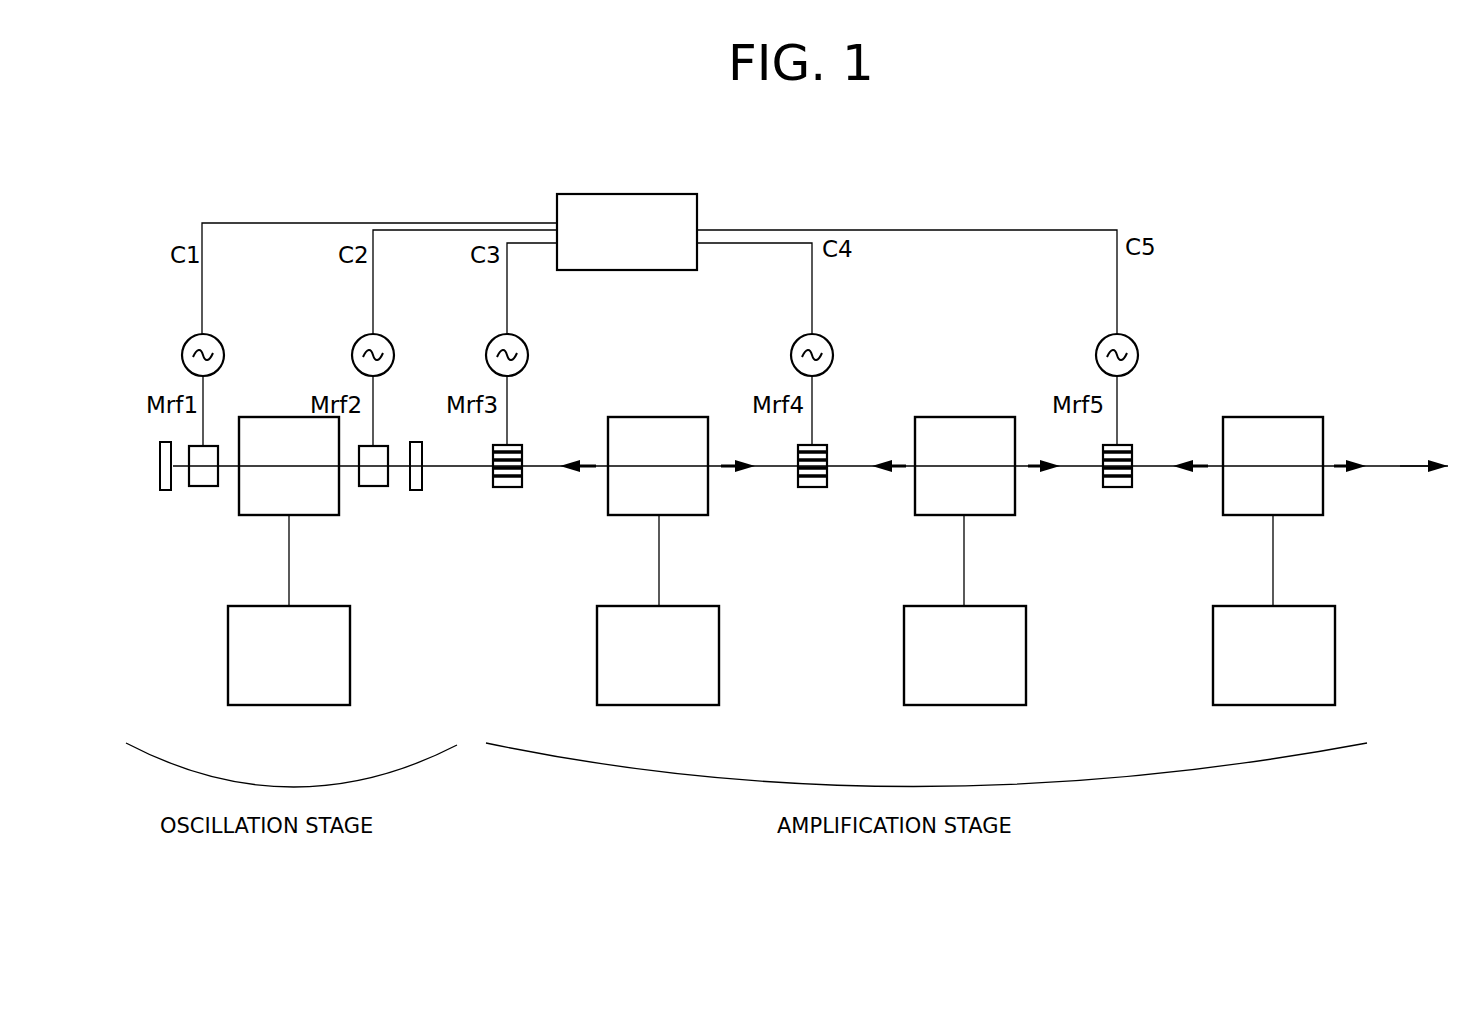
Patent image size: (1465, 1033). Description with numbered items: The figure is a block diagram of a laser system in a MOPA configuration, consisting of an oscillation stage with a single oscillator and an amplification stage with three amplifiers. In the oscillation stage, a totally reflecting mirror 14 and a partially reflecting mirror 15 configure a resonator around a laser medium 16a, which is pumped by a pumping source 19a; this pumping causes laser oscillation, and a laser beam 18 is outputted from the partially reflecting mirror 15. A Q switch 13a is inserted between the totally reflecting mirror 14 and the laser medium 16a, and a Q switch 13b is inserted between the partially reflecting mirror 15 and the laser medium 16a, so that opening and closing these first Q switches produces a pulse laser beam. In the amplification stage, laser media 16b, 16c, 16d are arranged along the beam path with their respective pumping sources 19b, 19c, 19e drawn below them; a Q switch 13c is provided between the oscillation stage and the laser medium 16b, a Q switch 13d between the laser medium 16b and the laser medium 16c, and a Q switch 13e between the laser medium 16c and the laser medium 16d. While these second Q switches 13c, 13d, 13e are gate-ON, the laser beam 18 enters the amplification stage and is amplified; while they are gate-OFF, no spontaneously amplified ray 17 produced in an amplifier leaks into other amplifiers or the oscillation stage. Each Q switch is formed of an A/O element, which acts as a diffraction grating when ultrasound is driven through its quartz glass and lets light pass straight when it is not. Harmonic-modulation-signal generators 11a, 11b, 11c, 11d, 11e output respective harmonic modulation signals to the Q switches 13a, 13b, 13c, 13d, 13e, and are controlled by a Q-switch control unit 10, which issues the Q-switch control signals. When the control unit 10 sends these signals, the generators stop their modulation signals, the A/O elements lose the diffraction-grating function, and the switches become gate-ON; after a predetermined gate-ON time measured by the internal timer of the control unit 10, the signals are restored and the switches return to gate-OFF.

The Q-switch control unit 10 is at (630, 194).
The harmonic-modulation-signal generator 11a is at (217, 342).
The harmonic-modulation-signal generator 11b is at (387, 342).
The harmonic-modulation-signal generator 11c is at (521, 342).
The harmonic-modulation-signal generator 11d is at (826, 342).
The harmonic-modulation-signal generator 11e is at (1131, 342).
The Q switch 13a is at (201, 490).
The Q switch 13b is at (371, 490).
The Q switch 13c is at (505, 490).
The Q switch 13d is at (810, 490).
The Q switch 13e is at (1115, 490).
The totally reflecting mirror 14 is at (168, 495).
The partially reflecting mirror 15 is at (417, 442).
The laser medium 16a is at (289, 417).
The laser medium 16b is at (658, 417).
The laser medium 16c is at (964, 417).
The laser medium 16d is at (1273, 417).
The spontaneously amplified ray 17 is at (575, 455).
The laser beam 18 is at (1413, 465).
The pumping source 19a is at (228, 660).
The pumping source 19b is at (597, 658).
The pumping source 19c is at (904, 658).
The pumping source 19e is at (1213, 658).